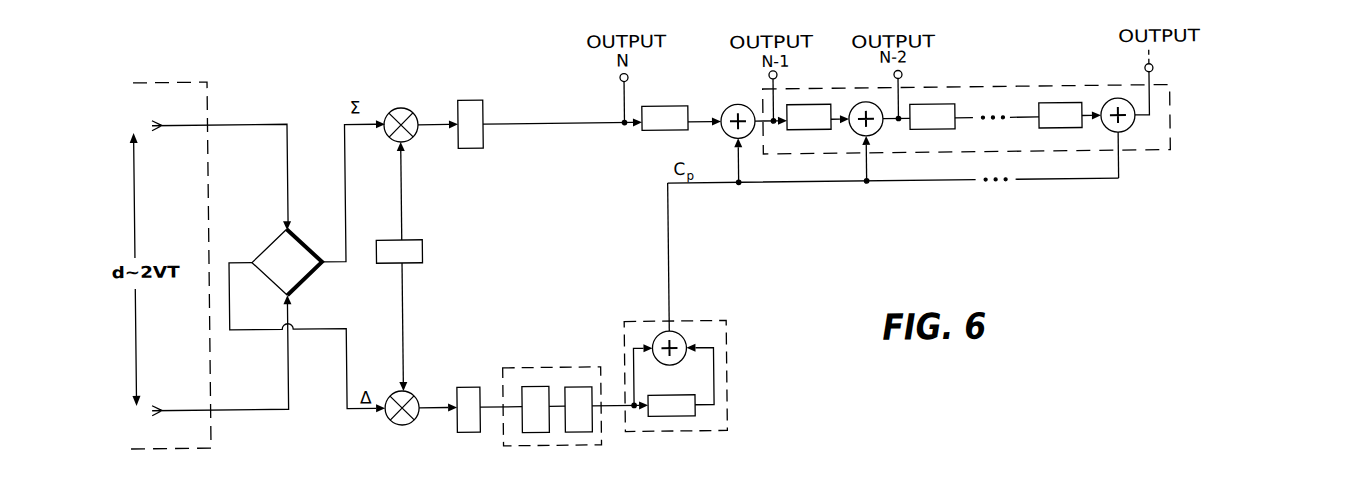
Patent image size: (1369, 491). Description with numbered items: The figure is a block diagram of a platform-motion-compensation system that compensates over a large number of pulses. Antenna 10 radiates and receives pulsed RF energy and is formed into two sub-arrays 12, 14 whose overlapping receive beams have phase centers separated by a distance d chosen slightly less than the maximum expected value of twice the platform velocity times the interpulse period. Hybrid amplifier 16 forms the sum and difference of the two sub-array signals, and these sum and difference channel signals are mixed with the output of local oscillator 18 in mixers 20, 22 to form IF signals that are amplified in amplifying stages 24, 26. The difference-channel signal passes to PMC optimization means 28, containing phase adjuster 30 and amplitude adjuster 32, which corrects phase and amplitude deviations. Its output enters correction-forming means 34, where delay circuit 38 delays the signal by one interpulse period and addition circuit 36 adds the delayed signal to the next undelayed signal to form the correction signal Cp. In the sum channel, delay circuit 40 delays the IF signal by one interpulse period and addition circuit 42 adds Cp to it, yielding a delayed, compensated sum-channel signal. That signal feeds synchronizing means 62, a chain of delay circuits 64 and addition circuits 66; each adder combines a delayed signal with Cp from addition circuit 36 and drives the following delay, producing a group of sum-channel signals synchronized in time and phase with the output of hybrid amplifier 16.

The antenna 10 is at (201, 79).
The sub-array 12 is at (190, 122).
The sub-array 14 is at (195, 410).
The hybrid amplifier 16 is at (273, 240).
The local oscillator 18 is at (423, 251).
The mixer 20 is at (414, 137).
The mixer 22 is at (392, 423).
The amplifying stage 24 is at (475, 149).
The amplifying stage 26 is at (468, 388).
The platform-motion-compensation optimization means 28 is at (570, 447).
The phase adjuster 30 is at (574, 388).
The amplitude adjuster 32 is at (537, 387).
The correction-forming means 34 is at (724, 430).
The addition circuit 36 is at (681, 340).
The delay circuit 38 is at (671, 419).
The delay circuit 40 is at (666, 133).
The addition circuit 42 is at (746, 110).
The synchronizing means 62 is at (1170, 140).
The delay circuits 64 is at (812, 134).
The addition circuits 66 is at (877, 137).